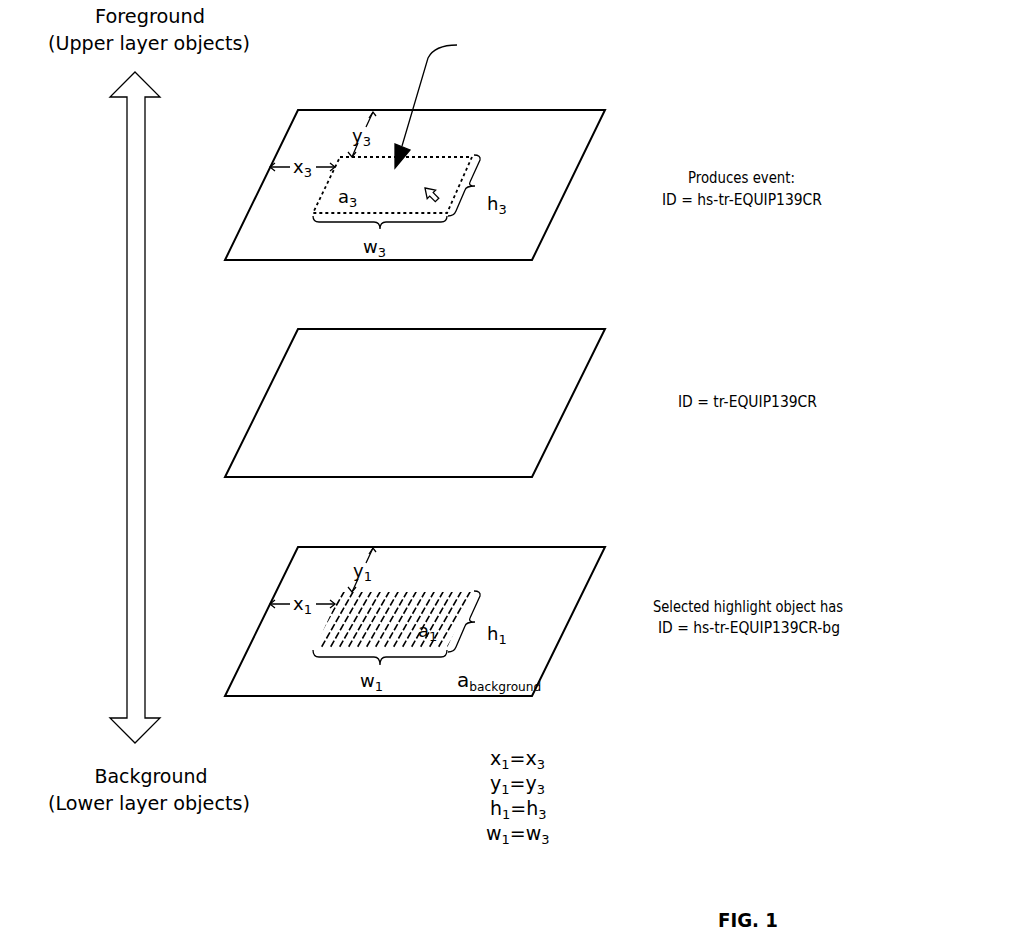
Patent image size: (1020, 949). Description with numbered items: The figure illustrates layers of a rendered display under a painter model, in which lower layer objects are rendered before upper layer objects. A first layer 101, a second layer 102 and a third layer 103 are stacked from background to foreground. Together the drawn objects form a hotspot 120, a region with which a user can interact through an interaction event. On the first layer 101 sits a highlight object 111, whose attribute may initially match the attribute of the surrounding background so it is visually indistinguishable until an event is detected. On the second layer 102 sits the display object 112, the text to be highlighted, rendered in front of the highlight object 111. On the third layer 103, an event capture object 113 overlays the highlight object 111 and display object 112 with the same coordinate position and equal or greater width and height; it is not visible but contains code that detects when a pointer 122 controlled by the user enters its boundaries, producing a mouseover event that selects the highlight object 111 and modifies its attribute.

The first layer 101 is at (289, 569).
The second layer 102 is at (289, 347).
The third layer 103 is at (297, 118).
The highlight object 111 is at (445, 592).
The display object 112 is at (400, 387).
The event capture object 113 is at (458, 155).
The hotspot 120 is at (449, 104).
The pointer 122 is at (438, 196).